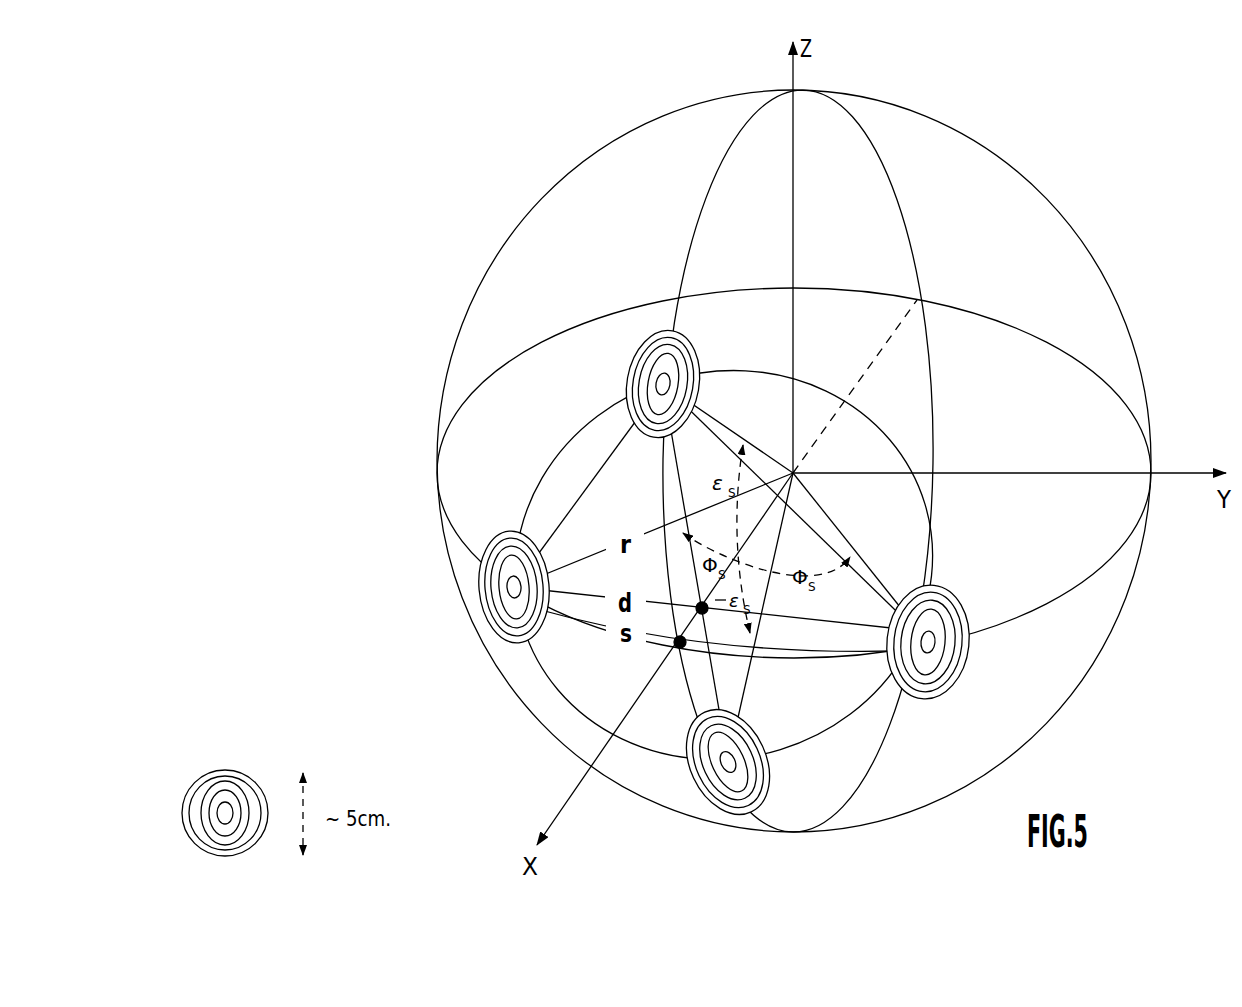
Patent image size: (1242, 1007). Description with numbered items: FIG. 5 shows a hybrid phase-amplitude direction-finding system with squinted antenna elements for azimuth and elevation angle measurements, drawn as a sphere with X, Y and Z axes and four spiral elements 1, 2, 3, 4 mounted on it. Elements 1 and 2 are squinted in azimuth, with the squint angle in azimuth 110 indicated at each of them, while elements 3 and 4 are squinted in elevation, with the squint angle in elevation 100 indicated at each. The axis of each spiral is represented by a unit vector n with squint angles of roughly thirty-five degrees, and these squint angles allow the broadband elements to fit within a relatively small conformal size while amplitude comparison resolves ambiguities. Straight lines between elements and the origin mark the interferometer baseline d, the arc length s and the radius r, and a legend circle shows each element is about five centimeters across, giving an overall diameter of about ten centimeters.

The squint angle in elevation 100 is at (683, 608).
The squint angle in azimuth 110 is at (712, 637).
The element 1 is at (513, 587).
The element 2 is at (983, 715).
The element 3 is at (663, 384).
The element 4 is at (727, 762).